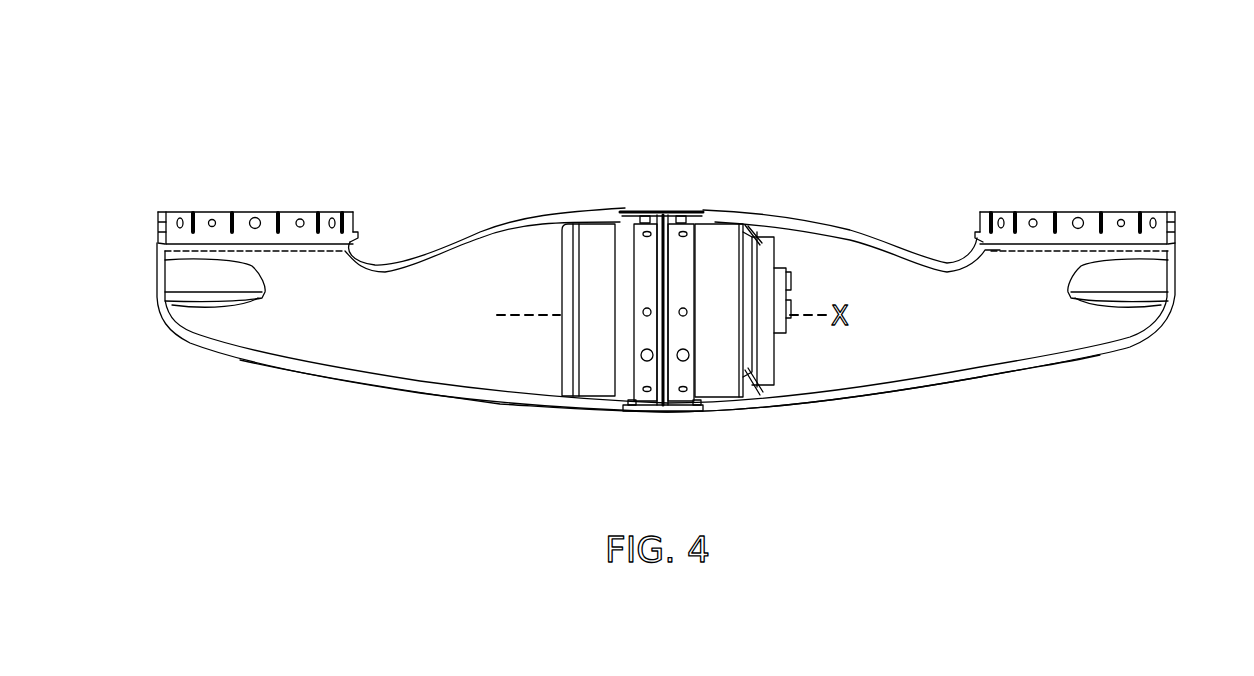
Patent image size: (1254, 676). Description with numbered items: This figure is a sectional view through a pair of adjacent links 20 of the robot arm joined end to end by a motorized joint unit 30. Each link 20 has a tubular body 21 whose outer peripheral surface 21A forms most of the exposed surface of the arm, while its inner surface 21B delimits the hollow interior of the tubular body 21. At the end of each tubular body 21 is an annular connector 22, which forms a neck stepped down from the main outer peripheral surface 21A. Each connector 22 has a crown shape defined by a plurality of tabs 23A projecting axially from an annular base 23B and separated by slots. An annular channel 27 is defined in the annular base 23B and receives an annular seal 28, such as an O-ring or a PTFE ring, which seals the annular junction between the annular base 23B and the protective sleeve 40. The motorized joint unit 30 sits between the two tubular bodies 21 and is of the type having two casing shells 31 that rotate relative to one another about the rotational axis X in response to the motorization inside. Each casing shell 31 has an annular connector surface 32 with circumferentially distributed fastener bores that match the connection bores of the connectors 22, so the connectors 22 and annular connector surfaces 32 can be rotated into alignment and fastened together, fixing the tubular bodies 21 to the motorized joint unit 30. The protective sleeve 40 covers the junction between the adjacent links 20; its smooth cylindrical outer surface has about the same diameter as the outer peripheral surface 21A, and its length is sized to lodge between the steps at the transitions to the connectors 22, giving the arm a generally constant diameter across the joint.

The link 20 is at (447, 165).
The tubular body 21 is at (313, 373).
The outer peripheral surface 21A is at (377, 384).
The inner surface 21B is at (400, 378).
The connector 22 is at (332, 188).
The tab 23A is at (356, 213).
The annular base 23B is at (357, 233).
The annular channel 27 is at (157, 245).
The annular seal 28 is at (622, 210).
The motorized joint unit 30 is at (682, 307).
The casing shell 31 is at (603, 308).
The annular connector surface 32 is at (700, 265).
The protective sleeve 40 is at (682, 197).